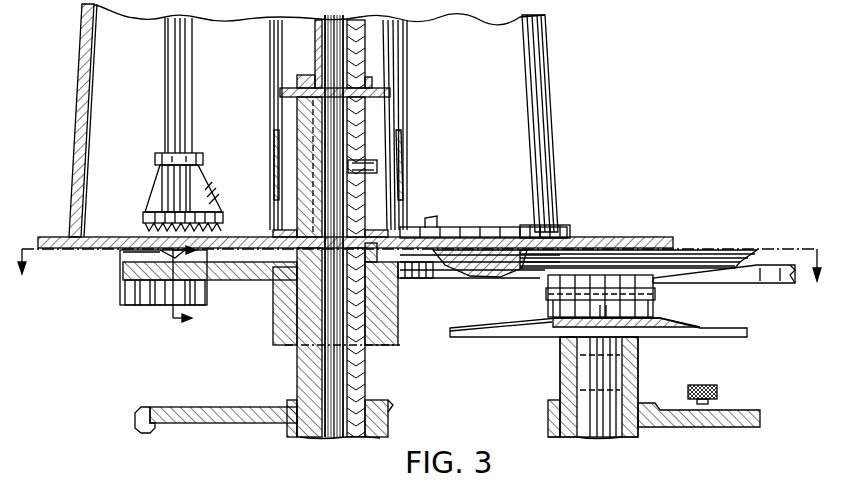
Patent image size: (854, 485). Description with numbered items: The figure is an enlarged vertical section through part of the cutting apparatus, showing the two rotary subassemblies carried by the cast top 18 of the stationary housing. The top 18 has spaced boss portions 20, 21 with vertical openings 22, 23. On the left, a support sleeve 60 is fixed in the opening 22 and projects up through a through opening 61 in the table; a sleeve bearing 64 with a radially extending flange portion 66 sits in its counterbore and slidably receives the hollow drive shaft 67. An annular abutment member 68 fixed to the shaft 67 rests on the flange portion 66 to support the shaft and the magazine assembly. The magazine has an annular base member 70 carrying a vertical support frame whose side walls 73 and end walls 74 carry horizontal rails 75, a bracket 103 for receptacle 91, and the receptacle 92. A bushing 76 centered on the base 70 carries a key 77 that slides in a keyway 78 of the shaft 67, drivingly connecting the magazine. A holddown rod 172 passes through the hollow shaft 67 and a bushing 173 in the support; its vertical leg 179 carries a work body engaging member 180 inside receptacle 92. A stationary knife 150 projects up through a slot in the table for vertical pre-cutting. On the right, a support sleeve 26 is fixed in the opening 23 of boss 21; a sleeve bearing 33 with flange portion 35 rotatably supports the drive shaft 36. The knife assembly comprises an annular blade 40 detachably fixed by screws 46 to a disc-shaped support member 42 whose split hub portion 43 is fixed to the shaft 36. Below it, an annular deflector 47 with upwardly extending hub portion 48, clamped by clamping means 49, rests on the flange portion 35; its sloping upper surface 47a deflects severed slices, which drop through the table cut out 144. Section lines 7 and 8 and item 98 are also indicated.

The receptacle 92 is at (72, 108).
The receptacle 91 is at (558, 90).
The vertically extending leg 179 is at (165, 100).
The work body engaging member 180 is at (150, 200).
The base member 70 is at (60, 238).
The section line 7- 7 is at (419, 265).
The section line 8- 8 is at (191, 286).
The support sleeve 60 is at (370, 366).
The side wall 73 is at (282, 38).
The bushing 173 is at (316, 63).
The end wall 74 is at (385, 50).
The keyway 78 is at (317, 115).
The key 77 is at (300, 135).
The rails 75 is at (272, 195).
The hollow drive shaft 67 is at (350, 390).
The bushing 76 is at (377, 112).
The bracket 103 is at (430, 228).
The cut out 144 is at (486, 245).
The ring 98 is at (565, 228).
The annular abutment member 68 is at (276, 280).
The stationary knife 150 is at (123, 258).
The flange portion 66 is at (276, 305).
The sleeve bearing 64 is at (365, 302).
The through opening 61 is at (372, 338).
The top 18 is at (150, 405).
The boss portion 21 is at (390, 422).
The opening 23 is at (300, 433).
The rod 172 is at (332, 440).
The screws 46 is at (490, 280).
The support member 42 is at (730, 246).
The blade 40 is at (740, 262).
The hub portion 43 is at (547, 288).
The clamping means 49 is at (548, 298).
The hub portion 48 is at (650, 315).
The upper surface 47a is at (700, 327).
The deflector 47 is at (710, 338).
The flange portion 35 is at (560, 340).
The sleeve bearing 33 is at (636, 370).
The opening 22 is at (555, 424).
The boss portion 20 is at (552, 436).
The drive shaft 36 is at (616, 438).
The support sleeve 26 is at (640, 438).